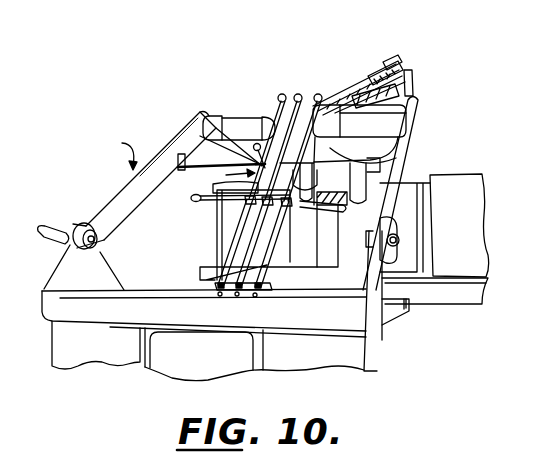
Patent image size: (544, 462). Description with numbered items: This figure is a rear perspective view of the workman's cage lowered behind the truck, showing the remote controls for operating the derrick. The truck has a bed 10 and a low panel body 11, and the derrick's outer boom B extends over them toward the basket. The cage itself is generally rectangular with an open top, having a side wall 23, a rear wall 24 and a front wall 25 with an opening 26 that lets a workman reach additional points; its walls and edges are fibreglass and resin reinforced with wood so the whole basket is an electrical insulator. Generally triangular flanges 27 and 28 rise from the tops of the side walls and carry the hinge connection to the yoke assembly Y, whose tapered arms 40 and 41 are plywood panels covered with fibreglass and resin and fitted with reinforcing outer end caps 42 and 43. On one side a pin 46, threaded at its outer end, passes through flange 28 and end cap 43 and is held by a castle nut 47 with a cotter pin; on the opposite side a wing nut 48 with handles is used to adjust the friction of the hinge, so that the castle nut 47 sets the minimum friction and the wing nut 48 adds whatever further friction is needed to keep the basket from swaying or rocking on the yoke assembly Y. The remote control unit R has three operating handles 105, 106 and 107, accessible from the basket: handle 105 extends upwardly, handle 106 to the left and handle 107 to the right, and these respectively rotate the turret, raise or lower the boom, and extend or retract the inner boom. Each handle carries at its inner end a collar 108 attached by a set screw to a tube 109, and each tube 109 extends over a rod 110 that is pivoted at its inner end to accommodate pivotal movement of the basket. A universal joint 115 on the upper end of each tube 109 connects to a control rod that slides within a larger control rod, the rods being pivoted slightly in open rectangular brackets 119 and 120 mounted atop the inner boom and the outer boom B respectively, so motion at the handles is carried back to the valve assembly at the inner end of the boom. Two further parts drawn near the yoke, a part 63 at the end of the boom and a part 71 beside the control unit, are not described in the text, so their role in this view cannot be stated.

The bed 10 is at (441, 293).
The low panel body 11 is at (486, 193).
The side wall 23 is at (376, 358).
The rear wall 24 is at (216, 354).
The front wall 25 is at (112, 358).
The opening 26 is at (152, 348).
The triangular flange 27 is at (100, 255).
The triangular flange 28 is at (380, 282).
The tapered arm 40 is at (111, 201).
The tapered arm 41 is at (400, 152).
The end cap 42 is at (80, 220).
The end cap 43 is at (387, 222).
The pin 46 is at (398, 244).
The castle nut 47 is at (399, 238).
The wing nut 48 is at (38, 229).
The cylinder 63 is at (242, 118).
The stop block 71 is at (188, 171).
The operating handle 105 is at (253, 146).
The operating handle 106 is at (199, 202).
The operating handle 107 is at (322, 206).
The collar 108 is at (245, 231).
The tube 109 is at (236, 128).
The rod 110 is at (216, 263).
The universal joint 115 is at (320, 93).
The open rectangular bracket 119 is at (375, 72).
The open rectangular bracket 120 is at (385, 61).
The boom B is at (414, 85).
The remote control unit R is at (226, 181).
The yoke assembly Y is at (122, 151).